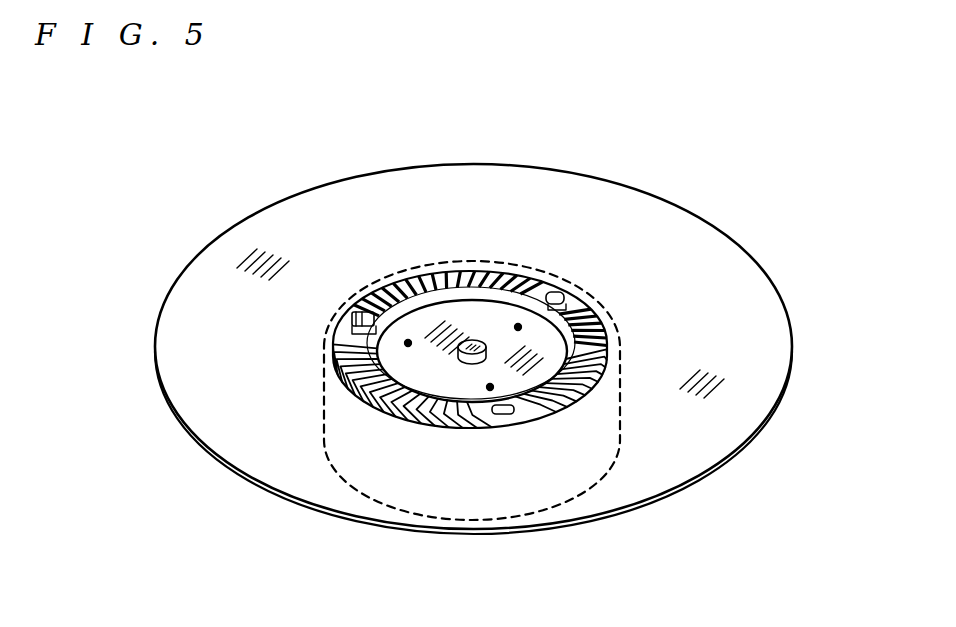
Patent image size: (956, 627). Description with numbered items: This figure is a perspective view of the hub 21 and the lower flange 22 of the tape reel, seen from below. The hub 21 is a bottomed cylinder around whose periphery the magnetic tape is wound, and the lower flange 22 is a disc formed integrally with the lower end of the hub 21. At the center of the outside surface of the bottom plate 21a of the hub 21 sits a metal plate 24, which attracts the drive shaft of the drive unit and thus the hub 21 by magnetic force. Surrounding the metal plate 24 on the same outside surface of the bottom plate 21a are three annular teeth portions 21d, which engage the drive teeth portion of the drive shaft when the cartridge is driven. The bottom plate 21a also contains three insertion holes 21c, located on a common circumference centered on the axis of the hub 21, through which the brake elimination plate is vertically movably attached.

The hub 21 is at (345, 466).
The bottom plate 21a is at (528, 418).
The insertion holes 21c is at (558, 294).
The annular teeth portions 21d is at (471, 268).
The lower flange 22 is at (737, 417).
The metal plate 24 is at (438, 315).